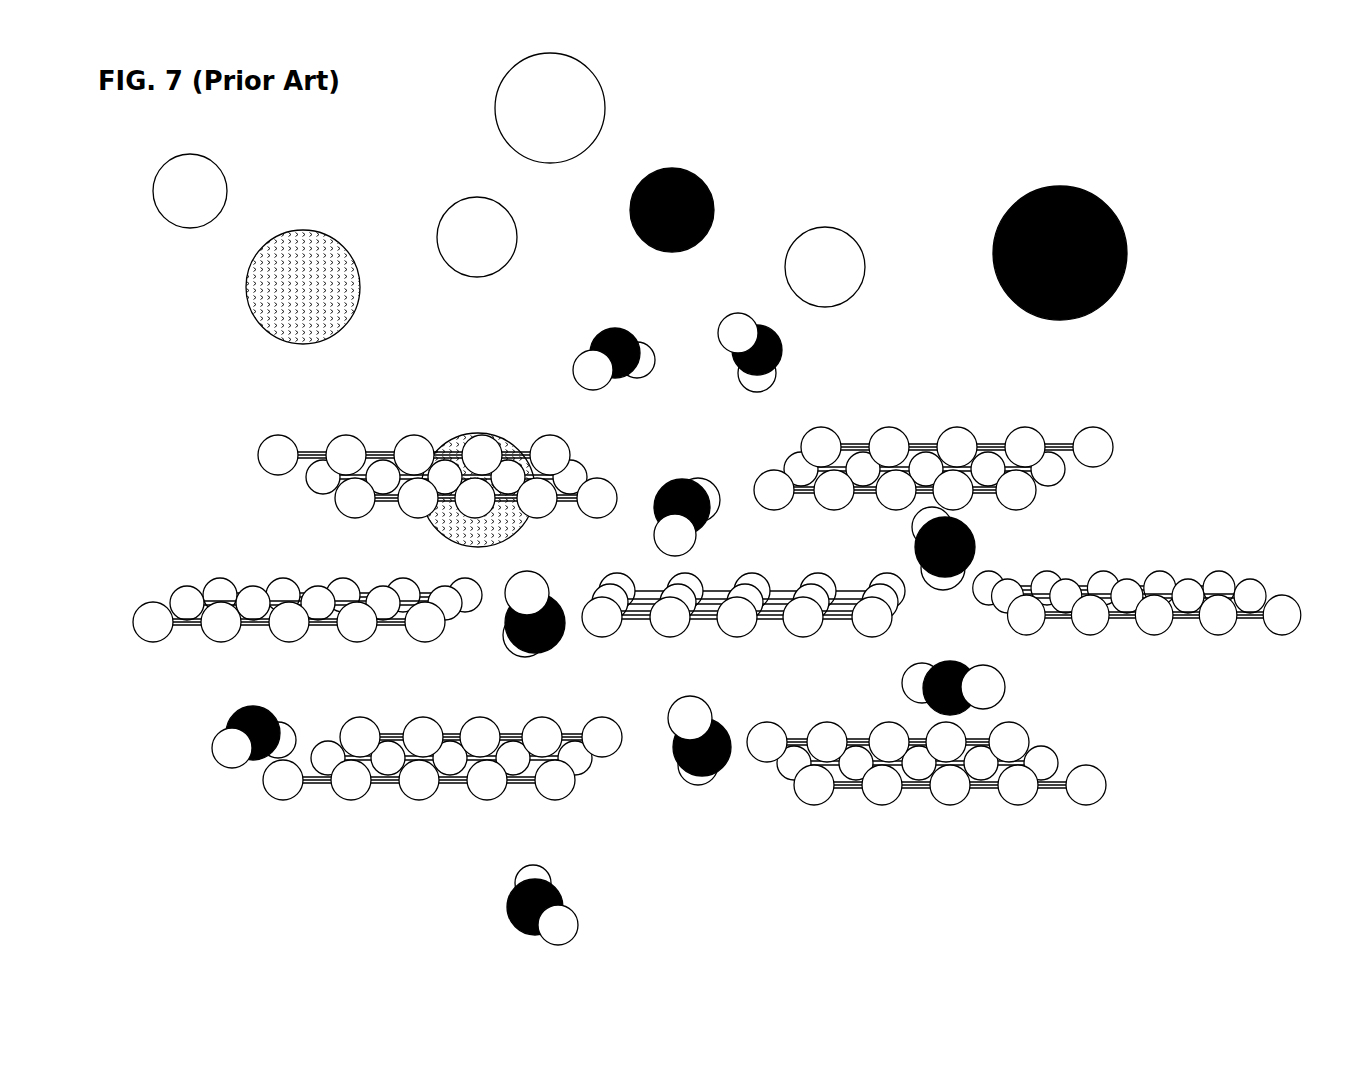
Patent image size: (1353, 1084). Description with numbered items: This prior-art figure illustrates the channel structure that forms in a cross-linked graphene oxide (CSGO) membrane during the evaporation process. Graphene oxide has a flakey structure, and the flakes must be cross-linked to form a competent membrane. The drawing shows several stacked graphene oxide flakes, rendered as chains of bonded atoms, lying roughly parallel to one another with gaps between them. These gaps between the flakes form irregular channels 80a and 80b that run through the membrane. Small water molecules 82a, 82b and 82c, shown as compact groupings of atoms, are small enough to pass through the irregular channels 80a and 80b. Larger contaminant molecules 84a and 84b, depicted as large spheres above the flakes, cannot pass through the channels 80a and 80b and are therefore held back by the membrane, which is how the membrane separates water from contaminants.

The irregular channel 80a is at (320, 422).
The irregular channel 80b is at (1198, 663).
The water molecule 82a is at (903, 560).
The water molecule 82b is at (495, 660).
The water molecule 82c is at (683, 795).
The contaminant molecule 84a is at (822, 200).
The contaminant molecule 84b is at (316, 218).